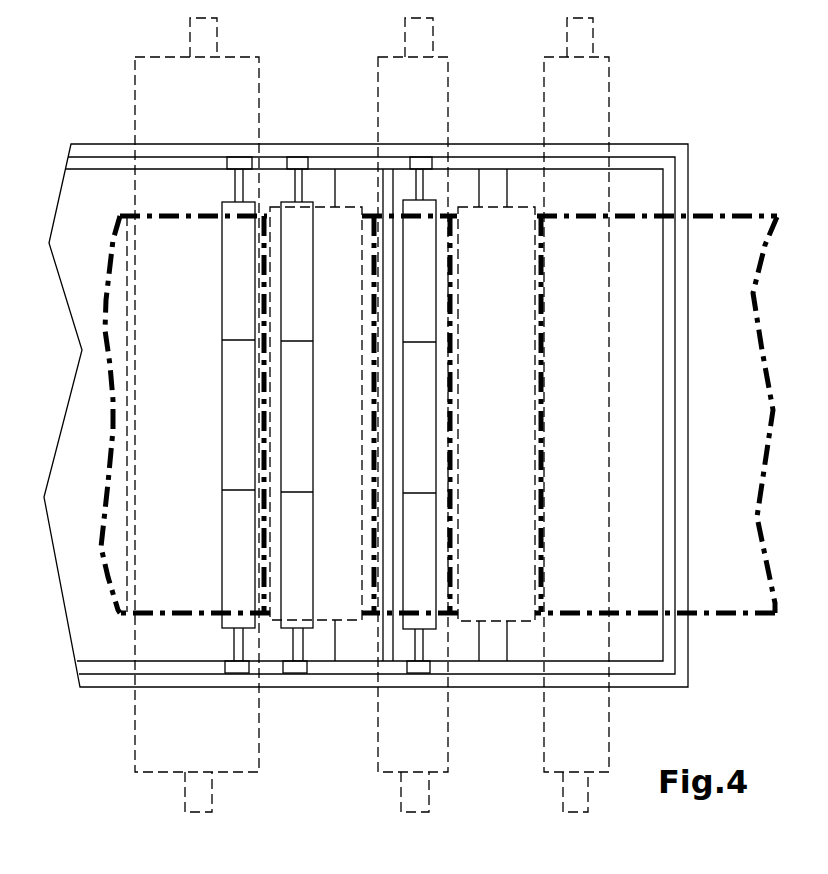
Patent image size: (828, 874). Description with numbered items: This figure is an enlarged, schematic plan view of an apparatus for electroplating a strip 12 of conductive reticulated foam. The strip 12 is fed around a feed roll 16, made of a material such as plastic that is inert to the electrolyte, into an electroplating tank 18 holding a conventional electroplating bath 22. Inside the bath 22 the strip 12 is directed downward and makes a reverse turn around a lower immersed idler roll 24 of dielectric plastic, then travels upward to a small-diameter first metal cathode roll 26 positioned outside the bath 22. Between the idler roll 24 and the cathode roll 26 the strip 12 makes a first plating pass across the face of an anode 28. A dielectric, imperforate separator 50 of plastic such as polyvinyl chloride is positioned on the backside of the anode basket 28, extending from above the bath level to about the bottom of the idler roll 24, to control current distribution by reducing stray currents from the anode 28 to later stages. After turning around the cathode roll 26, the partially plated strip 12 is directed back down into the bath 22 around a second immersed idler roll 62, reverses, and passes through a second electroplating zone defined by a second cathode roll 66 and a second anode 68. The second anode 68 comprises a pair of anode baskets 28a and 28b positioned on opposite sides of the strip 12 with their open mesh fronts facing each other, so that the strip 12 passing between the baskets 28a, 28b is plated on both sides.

The strip of conductive reticulated foam 12 is at (720, 210).
The feed roll 16 is at (595, 108).
The electroplating tank 18 is at (667, 650).
The electroplating bath 22 is at (632, 640).
The idler roll 24 is at (513, 600).
The first metal cathode roll 26 is at (437, 92).
The anode 28 is at (425, 553).
The anode basket 28a is at (240, 430).
The anode basket 28b is at (300, 450).
The separator 50 is at (387, 417).
The second immersed idler roll 62 is at (332, 600).
The second cathode roll 66 is at (243, 95).
The second anode 68 is at (322, 385).